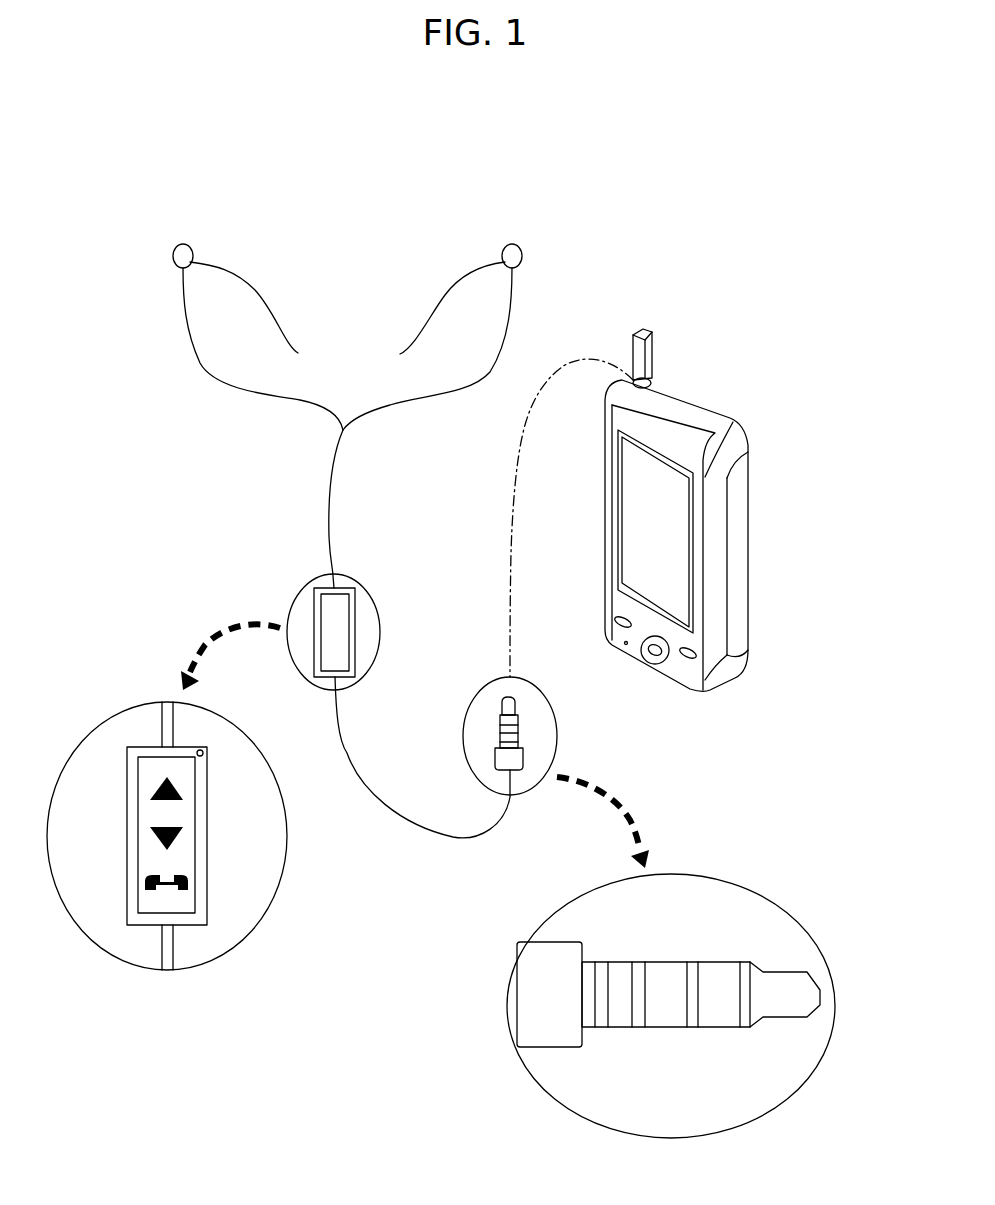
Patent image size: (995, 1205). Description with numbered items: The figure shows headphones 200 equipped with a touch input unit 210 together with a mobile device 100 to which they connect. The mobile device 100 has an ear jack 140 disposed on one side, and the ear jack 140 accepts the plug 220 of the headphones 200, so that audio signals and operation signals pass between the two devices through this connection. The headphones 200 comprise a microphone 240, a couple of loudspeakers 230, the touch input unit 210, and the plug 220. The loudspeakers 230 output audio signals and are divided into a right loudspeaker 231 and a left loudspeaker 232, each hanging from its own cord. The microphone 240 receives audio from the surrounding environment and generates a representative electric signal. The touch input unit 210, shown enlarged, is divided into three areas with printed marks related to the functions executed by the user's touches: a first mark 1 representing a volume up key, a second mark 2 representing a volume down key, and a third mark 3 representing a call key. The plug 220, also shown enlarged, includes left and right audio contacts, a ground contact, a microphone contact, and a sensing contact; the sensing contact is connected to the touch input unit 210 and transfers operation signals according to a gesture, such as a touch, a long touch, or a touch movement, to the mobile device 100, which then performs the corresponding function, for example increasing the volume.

The mobile device 100 is at (712, 510).
The ear jack 140 is at (653, 378).
The headphones 200 is at (441, 651).
The touch input unit 210 is at (213, 772).
The plug 220 is at (715, 915).
The loudspeakers 230 is at (347, 299).
The right loudspeaker 231 is at (298, 353).
The left loudspeaker 232 is at (438, 299).
The microphone 240 is at (214, 744).
The first mark 1 is at (183, 797).
The second mark 2 is at (183, 823).
The third mark 3 is at (183, 870).